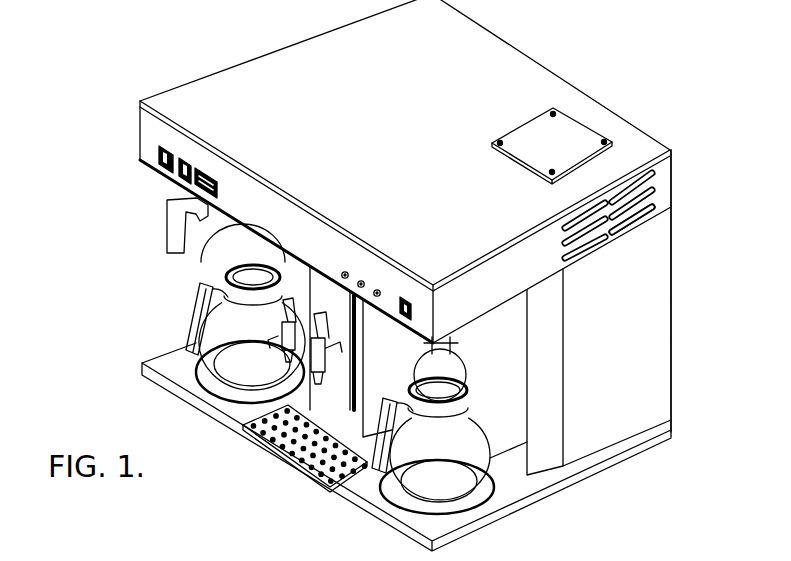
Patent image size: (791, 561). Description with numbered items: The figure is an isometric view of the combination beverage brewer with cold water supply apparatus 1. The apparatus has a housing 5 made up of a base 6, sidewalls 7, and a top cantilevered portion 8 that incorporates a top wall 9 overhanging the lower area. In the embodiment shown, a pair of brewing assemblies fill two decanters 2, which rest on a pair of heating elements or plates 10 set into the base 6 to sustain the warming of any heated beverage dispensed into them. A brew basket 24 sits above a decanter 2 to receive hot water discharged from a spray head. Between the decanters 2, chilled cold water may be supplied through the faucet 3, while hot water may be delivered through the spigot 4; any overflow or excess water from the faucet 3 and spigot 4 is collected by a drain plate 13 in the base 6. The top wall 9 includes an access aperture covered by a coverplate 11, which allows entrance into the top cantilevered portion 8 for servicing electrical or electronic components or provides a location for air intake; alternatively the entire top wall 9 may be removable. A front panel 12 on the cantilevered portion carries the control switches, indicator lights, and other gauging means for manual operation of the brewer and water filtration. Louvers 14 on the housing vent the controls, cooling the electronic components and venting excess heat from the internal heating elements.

The combination beverage brewer with cold water supply apparatus 1 is at (431, 237).
The decanters 2 is at (201, 294).
The faucet 3 is at (340, 364).
The spigot 4 is at (282, 345).
The housing 5 is at (676, 345).
The base 6 is at (563, 486).
The sidewalls 7 is at (636, 276).
The top cantilevered portion 8 is at (662, 188).
The top wall 9 is at (292, 62).
The heating elements or plates 10 is at (233, 392).
The coverplate 11 is at (561, 126).
The front panel 12 is at (286, 212).
The drain plate 13 is at (292, 461).
The louvers 14 is at (657, 205).
The brew basket 24 is at (224, 234).